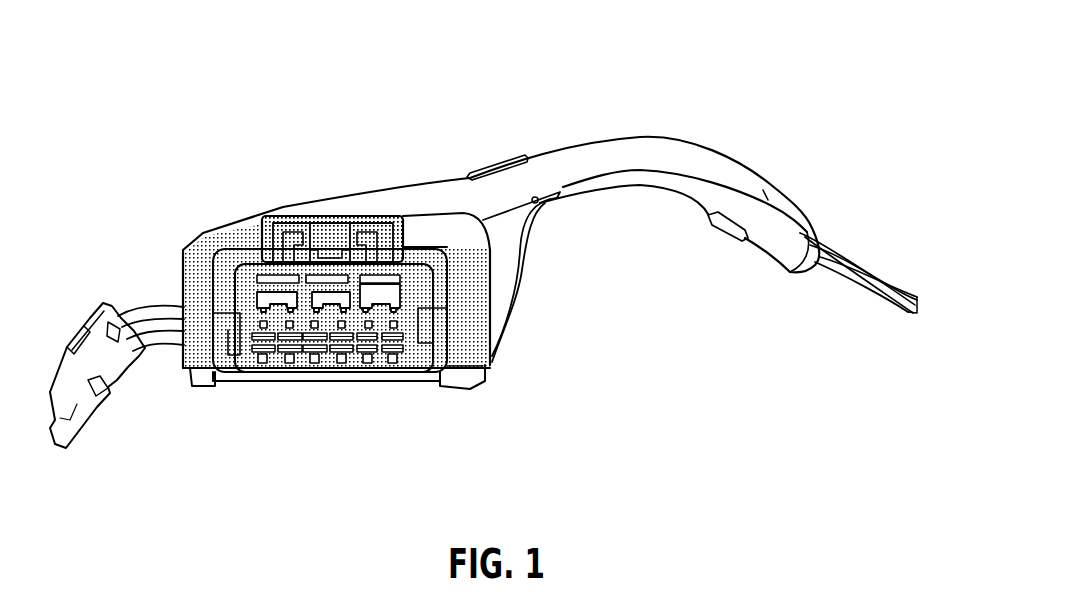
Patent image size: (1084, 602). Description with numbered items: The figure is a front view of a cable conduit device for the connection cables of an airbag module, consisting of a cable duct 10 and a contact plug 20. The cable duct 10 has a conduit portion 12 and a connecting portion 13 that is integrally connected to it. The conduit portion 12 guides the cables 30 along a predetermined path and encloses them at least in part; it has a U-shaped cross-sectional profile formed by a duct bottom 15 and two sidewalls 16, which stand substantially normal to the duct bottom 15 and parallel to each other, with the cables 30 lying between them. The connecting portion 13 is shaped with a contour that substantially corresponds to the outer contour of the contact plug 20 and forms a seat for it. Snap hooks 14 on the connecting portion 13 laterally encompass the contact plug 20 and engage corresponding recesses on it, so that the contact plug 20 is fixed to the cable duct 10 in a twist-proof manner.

The cable duct 10 is at (602, 118).
The conduit portion 12 is at (648, 182).
The connecting portion 13 is at (327, 208).
The snap hooks 14 is at (460, 380).
The duct bottom 15 is at (707, 160).
The sidewalls 16 is at (692, 192).
The contact plug 20 is at (377, 368).
The cables 30 is at (880, 278).